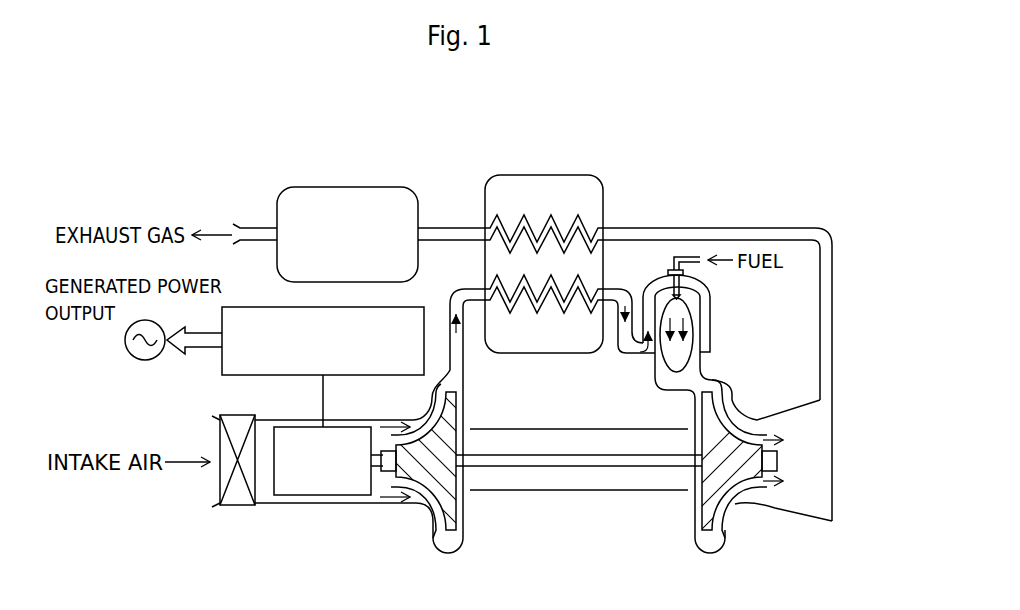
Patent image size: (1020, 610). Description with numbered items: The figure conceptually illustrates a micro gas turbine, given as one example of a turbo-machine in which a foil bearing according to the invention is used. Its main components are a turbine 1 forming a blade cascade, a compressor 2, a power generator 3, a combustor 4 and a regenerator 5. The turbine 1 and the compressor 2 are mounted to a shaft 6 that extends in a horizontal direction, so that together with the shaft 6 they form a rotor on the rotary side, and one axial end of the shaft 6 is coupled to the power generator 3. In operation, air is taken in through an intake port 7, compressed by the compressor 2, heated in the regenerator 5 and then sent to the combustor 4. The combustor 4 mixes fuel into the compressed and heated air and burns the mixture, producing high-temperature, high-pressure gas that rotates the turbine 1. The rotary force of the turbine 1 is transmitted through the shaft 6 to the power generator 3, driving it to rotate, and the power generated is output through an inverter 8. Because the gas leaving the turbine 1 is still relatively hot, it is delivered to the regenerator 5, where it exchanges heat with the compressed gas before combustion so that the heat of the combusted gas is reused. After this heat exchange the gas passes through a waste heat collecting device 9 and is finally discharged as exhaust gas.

The turbine 1 is at (739, 507).
The compressor 2 is at (424, 510).
The power generator 3 is at (316, 499).
The combustor 4 is at (722, 322).
The regenerator 5 is at (557, 168).
The shaft 6 is at (625, 463).
The intake port 7 is at (237, 499).
The inverter 8 is at (243, 365).
The waste heat collecting device 9 is at (347, 198).